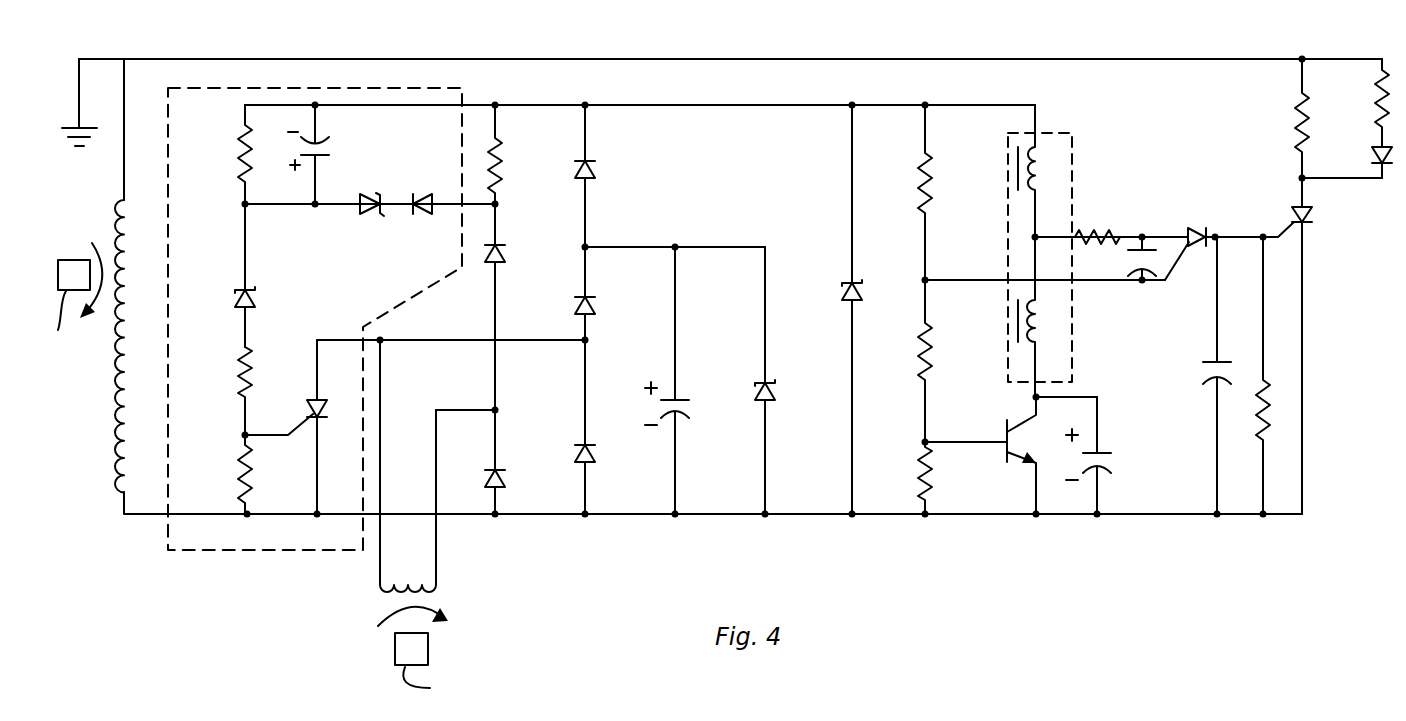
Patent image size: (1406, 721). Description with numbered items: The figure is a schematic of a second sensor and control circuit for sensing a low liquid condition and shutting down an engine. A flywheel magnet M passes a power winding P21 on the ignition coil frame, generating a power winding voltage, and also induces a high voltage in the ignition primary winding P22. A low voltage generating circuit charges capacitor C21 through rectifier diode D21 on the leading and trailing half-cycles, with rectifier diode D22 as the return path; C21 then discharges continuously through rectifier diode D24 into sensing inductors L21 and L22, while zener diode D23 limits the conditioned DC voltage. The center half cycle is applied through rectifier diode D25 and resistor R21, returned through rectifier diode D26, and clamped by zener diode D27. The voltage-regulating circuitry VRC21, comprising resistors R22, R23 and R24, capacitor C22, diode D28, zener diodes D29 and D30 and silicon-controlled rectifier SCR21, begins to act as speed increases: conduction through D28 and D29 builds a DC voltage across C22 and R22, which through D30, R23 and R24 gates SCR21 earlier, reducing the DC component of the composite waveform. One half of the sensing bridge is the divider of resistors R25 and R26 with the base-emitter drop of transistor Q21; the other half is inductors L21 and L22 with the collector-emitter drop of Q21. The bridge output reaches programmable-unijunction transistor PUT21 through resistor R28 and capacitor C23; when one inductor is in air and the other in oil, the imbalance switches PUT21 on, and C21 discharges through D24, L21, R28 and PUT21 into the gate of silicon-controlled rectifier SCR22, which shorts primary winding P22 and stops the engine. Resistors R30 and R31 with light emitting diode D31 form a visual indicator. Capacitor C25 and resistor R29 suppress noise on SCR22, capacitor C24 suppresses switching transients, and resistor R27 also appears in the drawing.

The voltage-regulating circuitry VRC21 is at (415, 88).
The ignition primary winding P22 is at (122, 470).
The power winding P21 is at (402, 585).
The flywheel magnet M is at (253, 472).
The resistor R21 is at (498, 160).
The resistor R22 is at (242, 165).
The resistor R23 is at (242, 380).
The resistor R24 is at (245, 475).
The resistor R25 is at (920, 195).
The resistor R26 is at (920, 348).
The resistor R27 is at (920, 460).
The resistor R28 is at (1092, 235).
The resistor R29 is at (1268, 400).
The resistor R30 is at (1298, 130).
The resistor R31 is at (1378, 105).
The capacitor C21 is at (678, 412).
The capacitor C22 is at (322, 158).
The capacitor C23 is at (1160, 216).
The capacitor C24 is at (1100, 453).
The capacitor C25 is at (1215, 360).
The rectifier diode D21 is at (590, 305).
The rectifier diode D22 is at (490, 478).
The zener diode D23 is at (768, 400).
The rectifier diode D24 is at (590, 170).
The rectifier diode D25 is at (498, 250).
The rectifier diode D26 is at (580, 456).
The zener diode D27 is at (848, 293).
The rectifier diode D28 is at (425, 212).
The zener diode D29 is at (375, 213).
The zener diode D30 is at (240, 305).
The light emitting diode D31 is at (1378, 160).
The silicon-controlled rectifier SCR21 is at (315, 400).
The silicon-controlled rectifier SCR22 is at (1312, 212).
The transistor Q21 is at (1005, 432).
The sensing inductor L21 is at (1040, 172).
The sensing inductor L22 is at (1040, 325).
The programmable-unijunction transistor PUT21 is at (1272, 170).